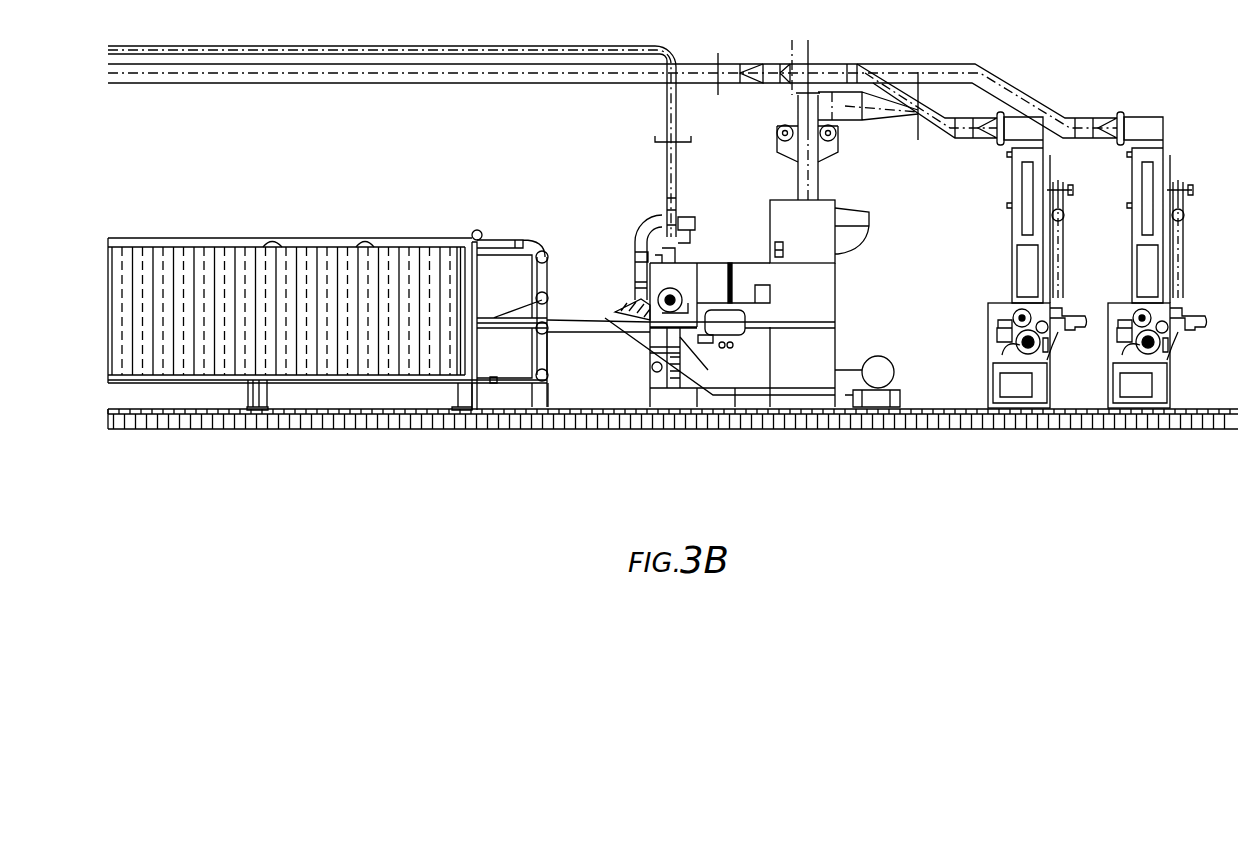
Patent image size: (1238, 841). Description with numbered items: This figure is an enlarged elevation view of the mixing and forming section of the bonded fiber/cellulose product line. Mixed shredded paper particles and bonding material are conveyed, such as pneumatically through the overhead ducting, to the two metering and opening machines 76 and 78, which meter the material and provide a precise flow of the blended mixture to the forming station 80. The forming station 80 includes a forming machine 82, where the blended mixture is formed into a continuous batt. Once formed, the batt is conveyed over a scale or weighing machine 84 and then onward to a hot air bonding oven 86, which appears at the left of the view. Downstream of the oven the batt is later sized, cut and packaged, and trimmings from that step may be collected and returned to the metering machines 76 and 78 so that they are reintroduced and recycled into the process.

The metering and opening machine 76 is at (983, 248).
The metering and opening machine 78 is at (1174, 116).
The forming station 80 is at (771, 168).
The forming machine 82 is at (840, 191).
The scale or weighing machine 84 is at (729, 250).
The hot air bonding oven 86 is at (399, 214).